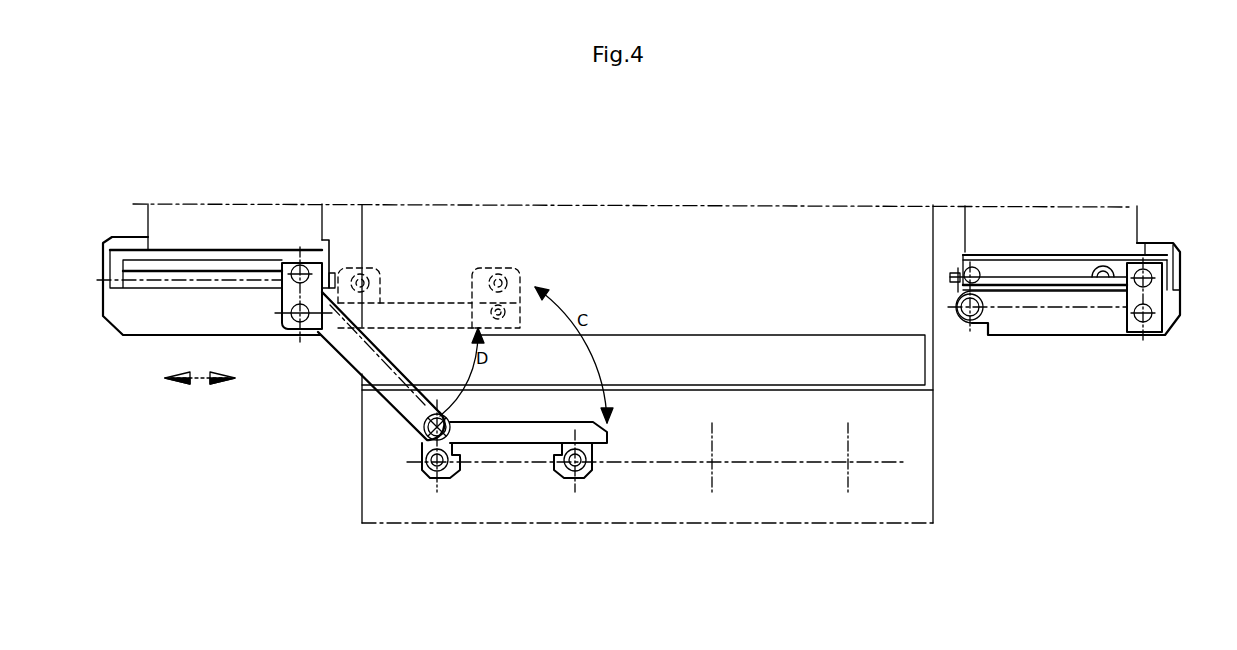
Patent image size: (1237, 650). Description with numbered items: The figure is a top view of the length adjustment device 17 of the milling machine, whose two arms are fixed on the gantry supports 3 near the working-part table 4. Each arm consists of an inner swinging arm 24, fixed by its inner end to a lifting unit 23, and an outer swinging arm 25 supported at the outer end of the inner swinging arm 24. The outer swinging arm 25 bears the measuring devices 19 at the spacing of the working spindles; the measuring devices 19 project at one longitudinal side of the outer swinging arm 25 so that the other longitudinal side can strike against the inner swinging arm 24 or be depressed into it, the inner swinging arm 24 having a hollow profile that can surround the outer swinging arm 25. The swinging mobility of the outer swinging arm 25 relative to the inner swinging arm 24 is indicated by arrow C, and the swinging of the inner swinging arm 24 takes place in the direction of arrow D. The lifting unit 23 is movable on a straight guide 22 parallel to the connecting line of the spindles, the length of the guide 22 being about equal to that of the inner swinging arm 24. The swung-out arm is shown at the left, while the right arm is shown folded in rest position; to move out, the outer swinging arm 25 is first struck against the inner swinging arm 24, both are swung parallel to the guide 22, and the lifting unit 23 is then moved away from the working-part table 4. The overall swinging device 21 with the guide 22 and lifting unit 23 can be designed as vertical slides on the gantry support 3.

The gantry support 3 is at (220, 228).
The working-part table 4 is at (647, 364).
The length adjustment device 17 is at (255, 443).
The measuring device 19 is at (425, 480).
The swinging device 21 is at (155, 338).
The straight guide 22 is at (270, 283).
The lifting unit 23 is at (308, 290).
The inner swinging arm 24 is at (387, 388).
The outer swinging arm 25 is at (542, 433).